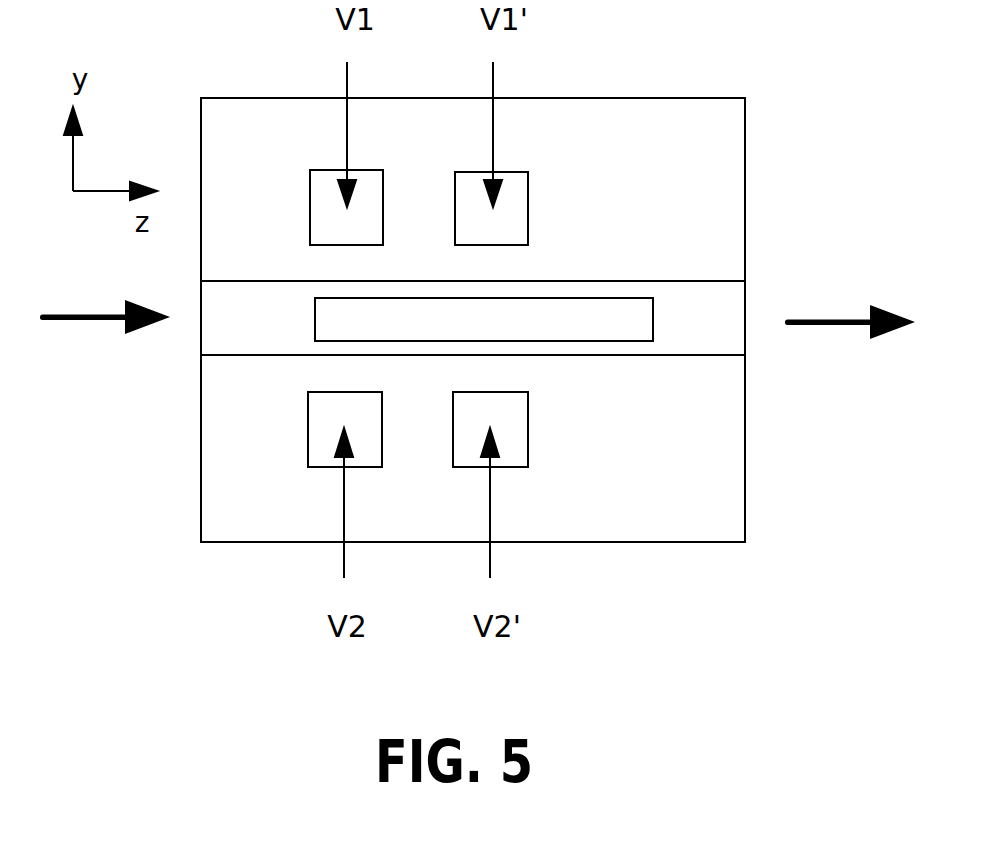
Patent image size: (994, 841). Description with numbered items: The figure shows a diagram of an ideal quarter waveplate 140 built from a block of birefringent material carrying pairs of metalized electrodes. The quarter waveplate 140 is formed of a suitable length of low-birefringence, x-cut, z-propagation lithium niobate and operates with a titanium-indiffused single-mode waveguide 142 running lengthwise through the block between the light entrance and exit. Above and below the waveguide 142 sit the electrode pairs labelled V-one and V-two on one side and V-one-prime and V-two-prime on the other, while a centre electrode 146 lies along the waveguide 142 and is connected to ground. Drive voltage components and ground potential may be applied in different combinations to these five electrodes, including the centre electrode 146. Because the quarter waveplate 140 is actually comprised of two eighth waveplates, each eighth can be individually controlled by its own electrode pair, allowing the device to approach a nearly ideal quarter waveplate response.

The quarter waveplate 140 is at (673, 125).
The single-mode waveguide 142 is at (700, 335).
The centre electrode 146 is at (617, 320).